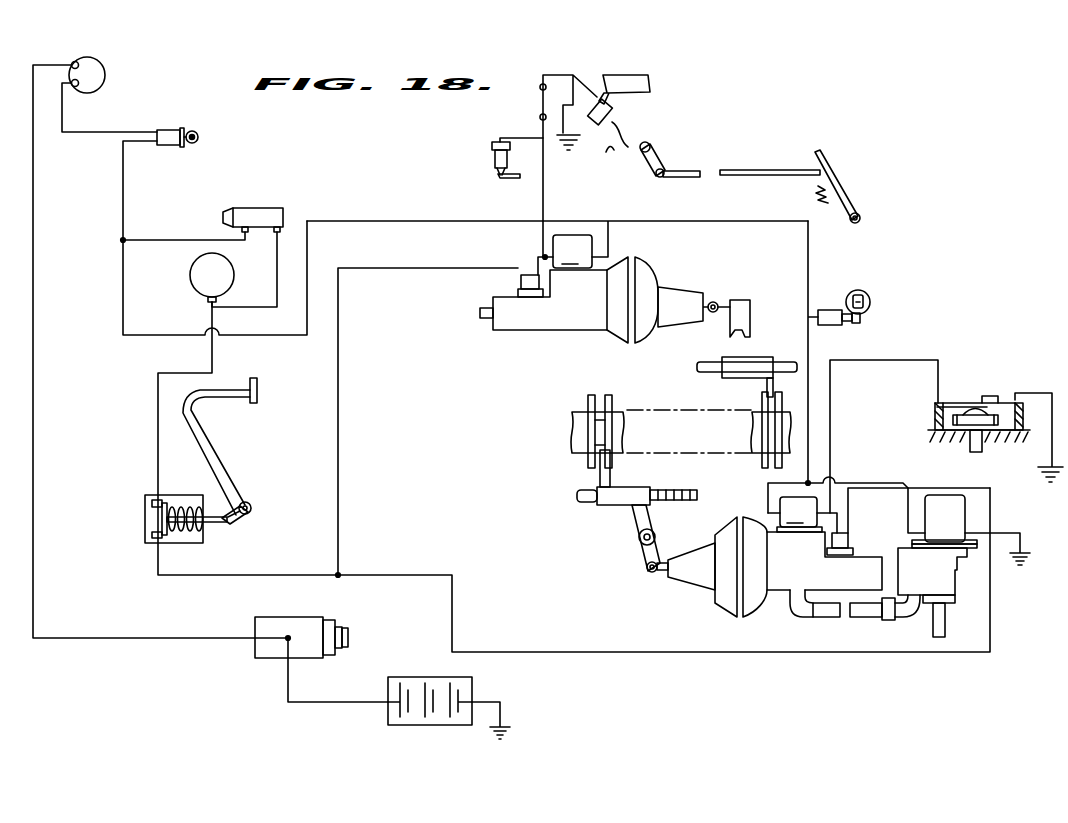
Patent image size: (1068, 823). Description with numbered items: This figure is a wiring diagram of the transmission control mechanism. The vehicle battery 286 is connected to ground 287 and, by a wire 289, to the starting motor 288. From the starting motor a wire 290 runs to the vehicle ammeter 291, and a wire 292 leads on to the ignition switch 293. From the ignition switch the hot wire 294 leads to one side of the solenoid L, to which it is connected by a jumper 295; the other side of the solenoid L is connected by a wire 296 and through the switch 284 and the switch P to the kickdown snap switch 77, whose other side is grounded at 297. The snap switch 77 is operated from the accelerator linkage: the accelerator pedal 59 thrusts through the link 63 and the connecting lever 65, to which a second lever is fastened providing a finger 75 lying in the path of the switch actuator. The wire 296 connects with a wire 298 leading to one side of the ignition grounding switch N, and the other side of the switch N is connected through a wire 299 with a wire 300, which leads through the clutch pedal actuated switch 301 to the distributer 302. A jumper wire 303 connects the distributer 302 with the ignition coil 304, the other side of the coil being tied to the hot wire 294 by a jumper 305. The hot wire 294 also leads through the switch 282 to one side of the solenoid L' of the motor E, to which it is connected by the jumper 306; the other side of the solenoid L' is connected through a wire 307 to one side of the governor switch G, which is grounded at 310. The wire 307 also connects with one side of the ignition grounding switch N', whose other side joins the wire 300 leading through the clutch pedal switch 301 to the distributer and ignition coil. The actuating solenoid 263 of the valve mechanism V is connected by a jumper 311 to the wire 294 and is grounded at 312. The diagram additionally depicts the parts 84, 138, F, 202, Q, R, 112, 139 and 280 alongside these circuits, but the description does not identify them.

The vehicle ammeter 291 is at (105, 77).
The wire 290 is at (33, 427).
The wire 292 is at (62, 120).
The ignition switch 293 is at (165, 130).
The jumper 305 is at (212, 226).
The hot wire 294 is at (123, 291).
The ignition coil 304 is at (253, 208).
The distributer 302 is at (196, 285).
The jumper wire 303 is at (277, 270).
The wire 300 is at (428, 574).
The wire 299 is at (338, 370).
The clutch pedal actuated switch 301 is at (193, 545).
The brake pedal 84 is at (258, 391).
The starting motor 288 is at (303, 627).
The wire 289 is at (338, 702).
The vehicle battery 286 is at (448, 718).
The ground 287 is at (510, 730).
The switch 284 is at (492, 150).
The contact 138 is at (498, 180).
The wire 296 is at (541, 215).
The switch P is at (541, 97).
The ground 297 is at (583, 128).
The snap switch 77 is at (614, 76).
The finger 75 is at (628, 151).
The connecting lever 65 is at (661, 163).
The link 63 is at (784, 172).
The accelerator pedal 59 is at (826, 168).
The jumper 295 is at (610, 238).
The wire 298 is at (538, 257).
The solenoid L is at (572, 251).
The ignition grounding switch N is at (512, 286).
The clutch power unit F is at (551, 341).
The lever 202 is at (766, 362).
The drum Q is at (588, 400).
The drum R is at (762, 398).
The lever 112 is at (628, 502).
The switch 282 is at (827, 310).
The governor switch 139 is at (868, 299).
The contact 280 is at (863, 317).
The wire 307 is at (832, 449).
The governor switch G is at (966, 397).
The ground 310 is at (1040, 466).
The jumper 306 is at (768, 493).
The jumper 311 is at (862, 482).
The solenoid L' is at (802, 515).
The ignition grounding switch N' is at (854, 534).
The motor E is at (786, 582).
The valve mechanism V is at (947, 583).
The actuating solenoid 263 is at (953, 516).
The ground 312 is at (1020, 533).